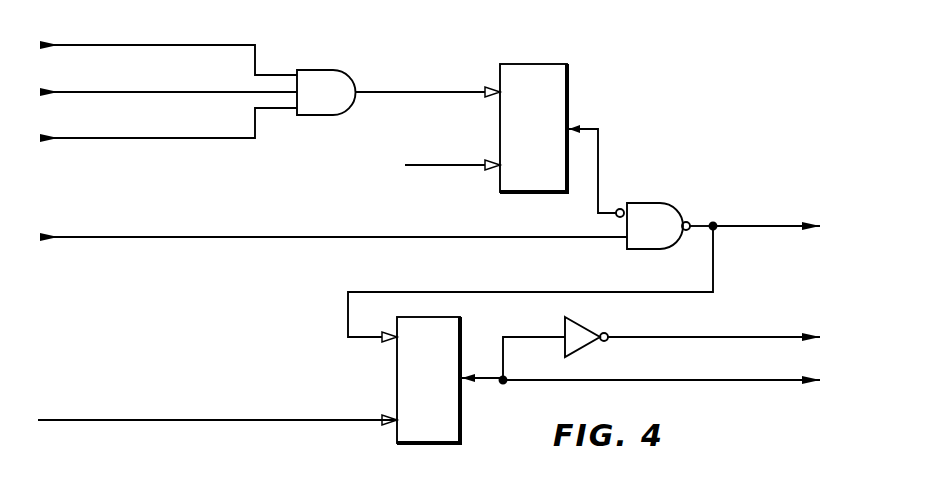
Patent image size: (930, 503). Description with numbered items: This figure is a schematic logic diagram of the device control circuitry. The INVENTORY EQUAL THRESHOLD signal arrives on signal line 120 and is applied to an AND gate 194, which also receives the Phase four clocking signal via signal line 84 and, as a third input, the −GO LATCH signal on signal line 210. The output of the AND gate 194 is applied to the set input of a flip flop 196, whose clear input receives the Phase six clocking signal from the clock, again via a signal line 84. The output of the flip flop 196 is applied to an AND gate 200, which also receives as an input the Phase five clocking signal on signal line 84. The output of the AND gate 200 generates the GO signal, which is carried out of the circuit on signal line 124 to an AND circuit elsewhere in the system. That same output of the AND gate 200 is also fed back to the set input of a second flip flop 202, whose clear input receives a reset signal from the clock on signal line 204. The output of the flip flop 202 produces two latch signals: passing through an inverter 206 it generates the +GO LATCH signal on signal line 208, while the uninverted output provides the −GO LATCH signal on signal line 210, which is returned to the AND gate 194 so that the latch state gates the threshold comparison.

The signal line 120 is at (255, 60).
The signal line 84 is at (158, 86).
The AND gate 194 is at (333, 92).
The flip flop 196 is at (567, 80).
The AND gate 200 is at (655, 210).
The signal line 124 is at (737, 226).
The flip flop 202 is at (412, 370).
The signal line 204 is at (240, 420).
The inverter 206 is at (567, 327).
The signal line 208 is at (752, 337).
The signal line 210 is at (215, 140).